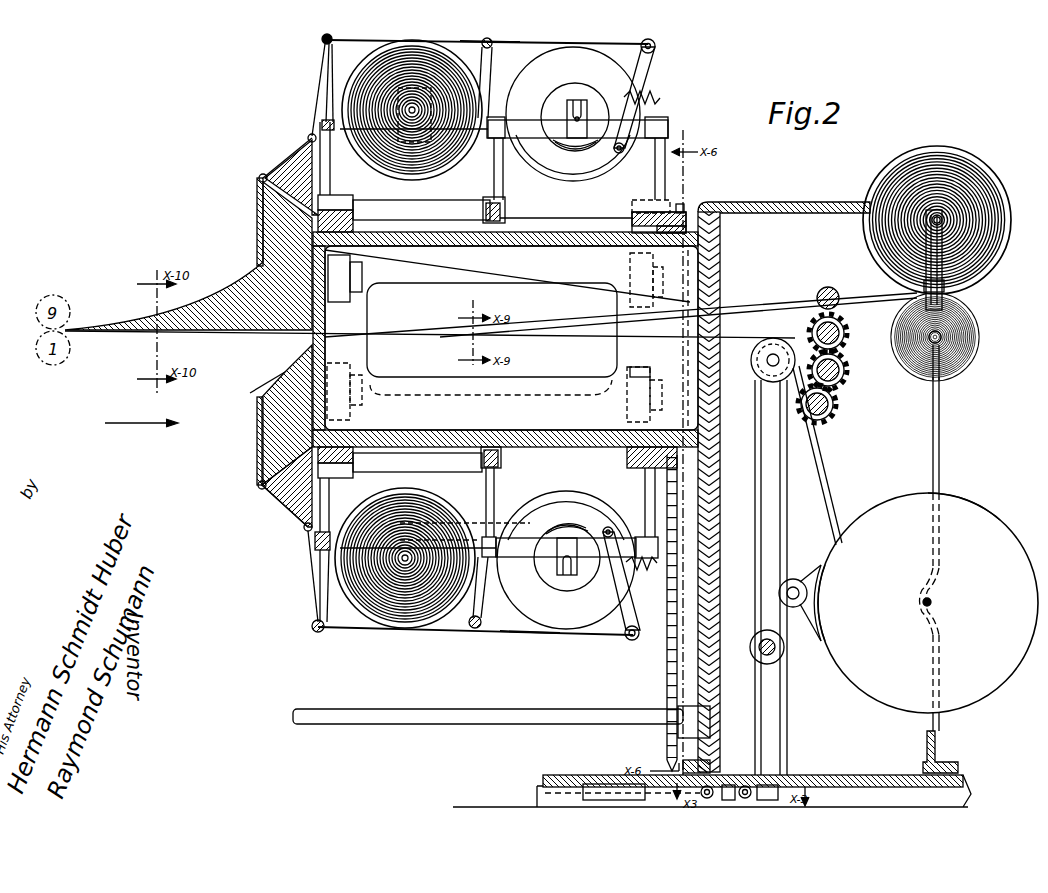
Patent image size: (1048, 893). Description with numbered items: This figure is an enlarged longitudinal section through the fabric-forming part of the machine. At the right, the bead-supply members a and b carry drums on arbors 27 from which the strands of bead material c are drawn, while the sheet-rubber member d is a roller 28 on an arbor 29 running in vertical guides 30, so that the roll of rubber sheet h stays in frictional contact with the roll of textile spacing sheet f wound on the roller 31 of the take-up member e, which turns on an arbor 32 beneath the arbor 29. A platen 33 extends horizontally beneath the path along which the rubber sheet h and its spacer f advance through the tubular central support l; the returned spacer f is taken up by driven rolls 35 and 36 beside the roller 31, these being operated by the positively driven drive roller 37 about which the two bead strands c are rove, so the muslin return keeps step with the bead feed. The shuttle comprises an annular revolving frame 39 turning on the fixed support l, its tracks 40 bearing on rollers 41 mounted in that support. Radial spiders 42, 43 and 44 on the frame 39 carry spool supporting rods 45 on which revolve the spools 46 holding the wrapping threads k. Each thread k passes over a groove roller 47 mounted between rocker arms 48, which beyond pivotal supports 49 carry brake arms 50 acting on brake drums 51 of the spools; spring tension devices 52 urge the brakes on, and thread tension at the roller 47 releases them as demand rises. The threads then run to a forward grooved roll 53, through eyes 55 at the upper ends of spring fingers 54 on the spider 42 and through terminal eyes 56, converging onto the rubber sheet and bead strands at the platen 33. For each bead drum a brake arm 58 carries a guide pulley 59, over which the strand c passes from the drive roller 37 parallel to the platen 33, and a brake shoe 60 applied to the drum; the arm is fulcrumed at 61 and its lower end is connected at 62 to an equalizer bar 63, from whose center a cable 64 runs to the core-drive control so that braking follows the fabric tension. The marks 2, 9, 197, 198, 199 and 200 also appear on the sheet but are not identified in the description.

The roll of material 2 is at (1014, 565).
The coiled spring disc 9 is at (490, 96).
The arbor 27 is at (933, 598).
The drum or roller 28 is at (945, 222).
The arbor 29 is at (946, 228).
The vertical guides 30 is at (980, 283).
The roller 31 is at (967, 328).
The arbor 32 is at (940, 350).
The platen 33 is at (583, 341).
The driven roll 35 is at (846, 333).
The driven roll 36 is at (847, 368).
The drive roller 37 is at (836, 404).
The annular revolving frame 39 is at (444, 197).
The tracks 40 is at (356, 226).
The rollers or bearings 41 is at (338, 283).
The radial spider 42 is at (330, 189).
The radial spider 43 is at (499, 190).
The radial spider 44 is at (651, 183).
The spool supporting rods 45 is at (516, 120).
The spools or bobbins 46 is at (481, 43).
The groove roller 47 is at (491, 43).
The rocker arms 48 is at (486, 70).
The pivotal supports 49 is at (617, 154).
The brake arms 50 is at (596, 154).
The brake drums 51 is at (566, 582).
The tension devices 52 is at (632, 571).
The forward grooved roll 53 is at (321, 40).
The spring fingers 54 is at (276, 168).
The eyes 55 is at (307, 136).
The terminal eyes 56 is at (258, 179).
The brake arm 58 is at (761, 537).
The guide sheave or pulley 59 is at (765, 378).
The brake shoe 60 is at (810, 570).
The fulcrum 61 is at (780, 652).
The connection 62 is at (745, 782).
The equalizer bar 63 is at (712, 776).
The cable or rope 64 is at (548, 777).
The lug 197 is at (683, 208).
The chain end 198 is at (664, 692).
The rod 199 is at (490, 722).
The chain 200 is at (666, 662).
The bead material supplying member a is at (982, 506).
The bead material supplying member b is at (957, 495).
The bead-forming material c is at (829, 418).
The sheet rubber supplying member d is at (999, 190).
The spacing sheet take-up member e is at (968, 352).
The textile spacing sheet f is at (738, 320).
The sheet rubber h is at (797, 314).
The textile strands, cords or threads k is at (362, 40).
The tubular central support l is at (538, 220).